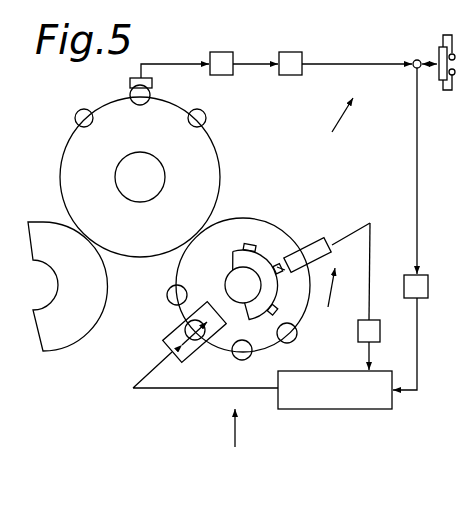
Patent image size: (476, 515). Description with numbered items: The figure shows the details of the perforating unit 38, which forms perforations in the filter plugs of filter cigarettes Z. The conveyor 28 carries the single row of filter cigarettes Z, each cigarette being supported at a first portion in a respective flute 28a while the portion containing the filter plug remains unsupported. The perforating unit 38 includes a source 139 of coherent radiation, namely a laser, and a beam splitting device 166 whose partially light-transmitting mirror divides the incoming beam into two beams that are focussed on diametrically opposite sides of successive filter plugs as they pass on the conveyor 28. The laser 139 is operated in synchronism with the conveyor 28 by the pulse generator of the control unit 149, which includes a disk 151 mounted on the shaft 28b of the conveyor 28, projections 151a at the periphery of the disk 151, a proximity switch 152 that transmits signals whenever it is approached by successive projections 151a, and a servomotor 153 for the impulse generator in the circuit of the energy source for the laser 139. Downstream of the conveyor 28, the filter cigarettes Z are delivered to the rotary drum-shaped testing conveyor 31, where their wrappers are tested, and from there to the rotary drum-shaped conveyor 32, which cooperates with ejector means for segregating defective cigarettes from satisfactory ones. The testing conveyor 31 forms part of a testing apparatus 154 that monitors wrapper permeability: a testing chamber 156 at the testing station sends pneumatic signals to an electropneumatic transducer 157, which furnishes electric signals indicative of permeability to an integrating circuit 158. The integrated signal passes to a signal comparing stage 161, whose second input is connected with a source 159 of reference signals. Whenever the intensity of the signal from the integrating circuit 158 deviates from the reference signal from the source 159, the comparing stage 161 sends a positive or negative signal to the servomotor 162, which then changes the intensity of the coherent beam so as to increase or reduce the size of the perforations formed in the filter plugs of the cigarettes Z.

The testing conveyor 31 is at (206, 158).
The conveyor 28 is at (187, 267).
The flute 28a is at (253, 346).
The shaft 28b is at (226, 284).
The rotary drum-shaped conveyor 32 is at (57, 333).
The perforating unit 38 is at (235, 443).
The source of coherent radiation 139 is at (338, 401).
The control unit 149 is at (333, 304).
The disk 151 is at (258, 263).
The projections 151a is at (246, 242).
The proximity switch 152 is at (322, 240).
The servomotor 153 is at (372, 328).
The testing apparatus 154 is at (338, 127).
The testing chamber 156 is at (152, 83).
The electropneumatic transducer 157 is at (218, 52).
The integrating circuit 158 is at (297, 55).
The source of reference signals 159 is at (439, 78).
The signal comparing stage 161 is at (417, 58).
The servomotor 162 is at (428, 296).
The beam splitting device 166 is at (188, 362).
The filter cigarettes Z is at (198, 342).